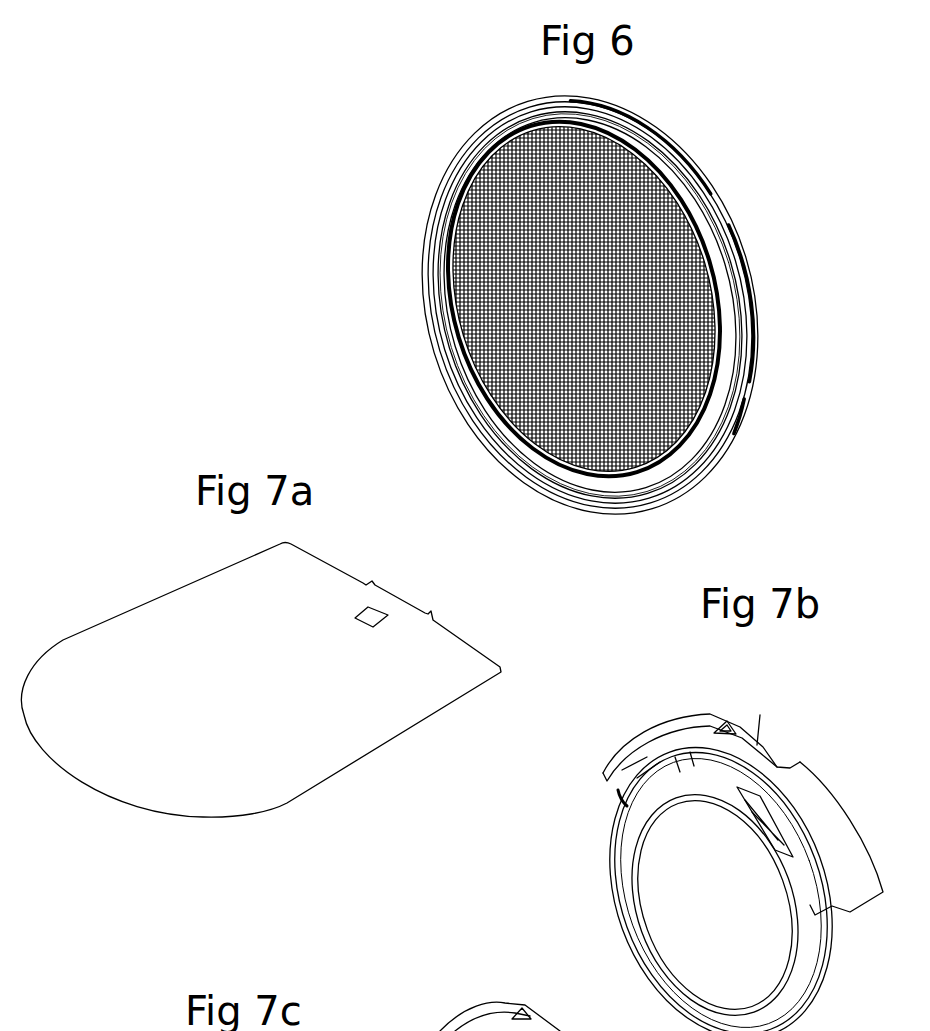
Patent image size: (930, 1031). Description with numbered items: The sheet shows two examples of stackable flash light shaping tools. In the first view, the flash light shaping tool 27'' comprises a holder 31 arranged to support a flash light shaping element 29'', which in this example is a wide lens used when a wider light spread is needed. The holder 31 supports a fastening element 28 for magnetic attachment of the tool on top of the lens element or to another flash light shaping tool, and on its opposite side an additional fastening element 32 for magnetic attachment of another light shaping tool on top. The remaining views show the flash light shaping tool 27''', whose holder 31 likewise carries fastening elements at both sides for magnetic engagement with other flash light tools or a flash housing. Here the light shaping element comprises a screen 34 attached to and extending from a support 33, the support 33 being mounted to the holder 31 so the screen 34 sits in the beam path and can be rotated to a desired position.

In FIG. 6, the flash light shaping tool 27'' is at (598, 305).
In FIG. 7C, the flash light shaping tool 27''' is at (58, 1009).
In FIG. 6, the fastening element 28 is at (666, 178).
In FIG. 6, the flash light shaping element 29'' is at (557, 299).
In FIG. 6, the holder 31 is at (442, 150).
In FIG. 7B, the holder 31 is at (611, 877).
In FIG. 6, the additional fastening element 32 is at (464, 311).
In FIG. 7B, the support 33 is at (673, 718).
In FIG. 7C, the support 33 is at (487, 1007).
In FIG. 7A, the screen 34 is at (172, 598).